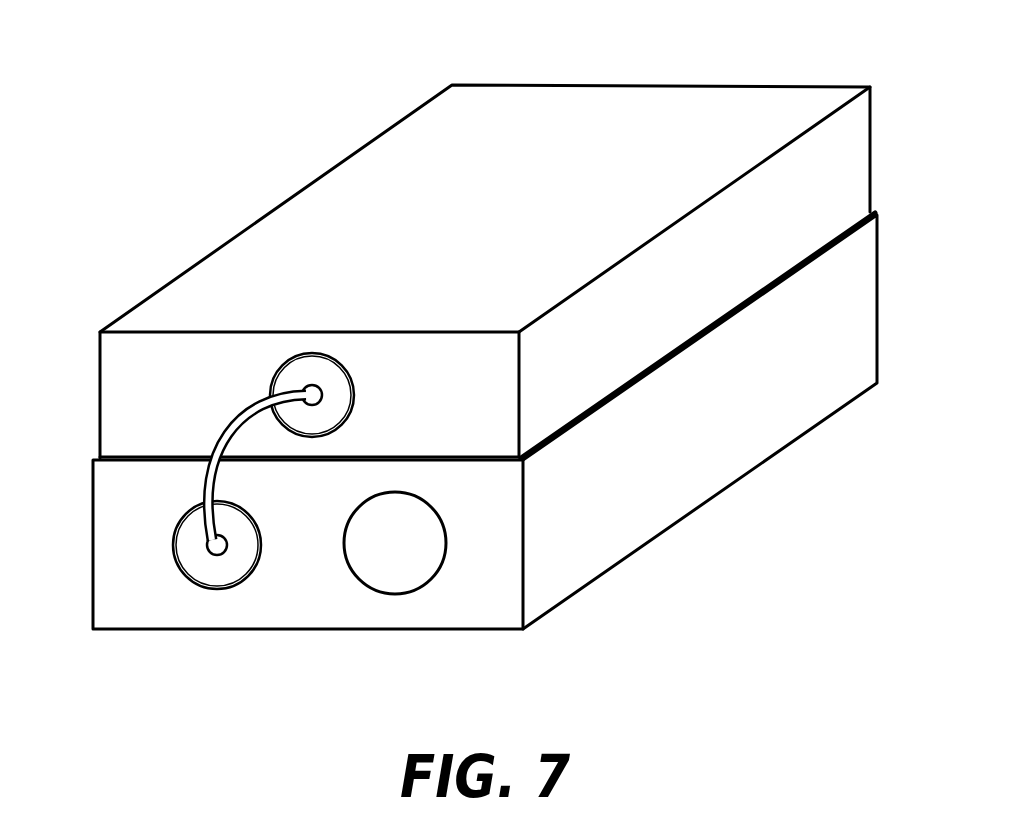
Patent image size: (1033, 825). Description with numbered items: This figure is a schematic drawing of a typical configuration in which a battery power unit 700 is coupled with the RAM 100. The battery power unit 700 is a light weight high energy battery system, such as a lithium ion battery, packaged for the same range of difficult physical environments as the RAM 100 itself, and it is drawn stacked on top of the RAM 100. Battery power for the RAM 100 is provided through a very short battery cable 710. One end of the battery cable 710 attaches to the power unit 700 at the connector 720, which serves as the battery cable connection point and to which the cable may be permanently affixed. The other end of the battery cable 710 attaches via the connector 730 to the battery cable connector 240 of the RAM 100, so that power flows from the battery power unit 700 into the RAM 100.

The battery power unit 700 is at (715, 85).
The RAM 100 is at (740, 457).
The connector 720 is at (293, 356).
The connector 730 is at (207, 547).
The battery cable 710 is at (217, 430).
The battery cable connector 240 is at (217, 590).